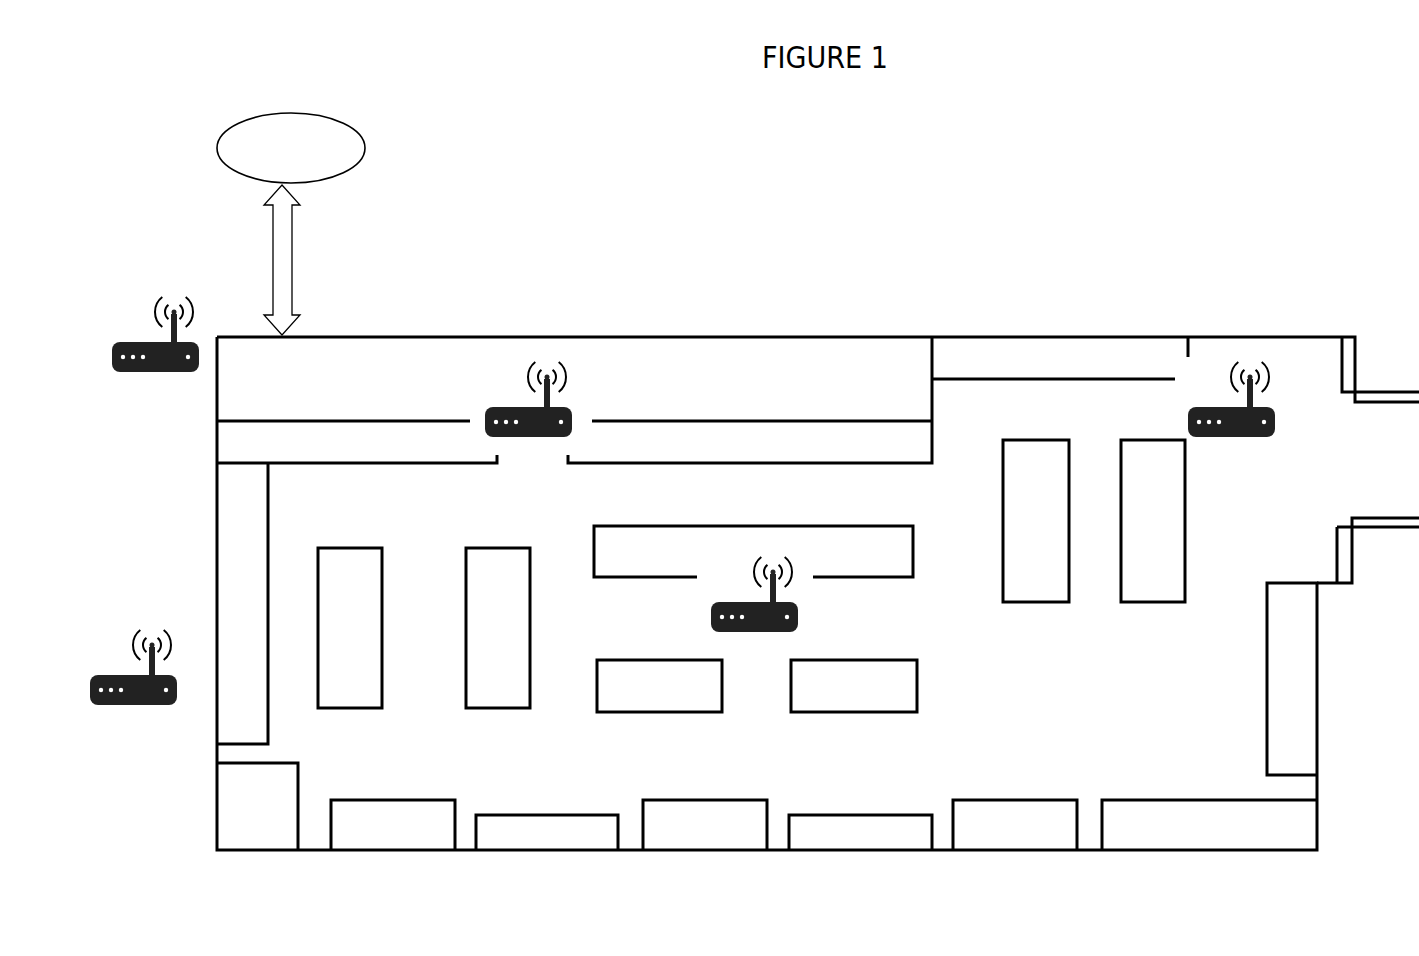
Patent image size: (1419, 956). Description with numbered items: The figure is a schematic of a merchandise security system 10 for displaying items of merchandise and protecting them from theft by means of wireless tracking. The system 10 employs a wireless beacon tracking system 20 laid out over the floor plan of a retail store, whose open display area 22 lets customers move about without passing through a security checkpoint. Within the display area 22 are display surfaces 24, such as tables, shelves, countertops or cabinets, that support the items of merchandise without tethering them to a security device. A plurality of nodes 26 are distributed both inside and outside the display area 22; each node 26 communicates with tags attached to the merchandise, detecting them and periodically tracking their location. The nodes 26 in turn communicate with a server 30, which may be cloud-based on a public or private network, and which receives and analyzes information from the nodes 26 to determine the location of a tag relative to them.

The merchandise security system 10 is at (1045, 205).
The wireless beacon tracking system 20 is at (1017, 337).
The display area 22 is at (1017, 702).
The display surface 24 is at (658, 420).
The node 26 is at (148, 292).
The server 30 is at (291, 224).